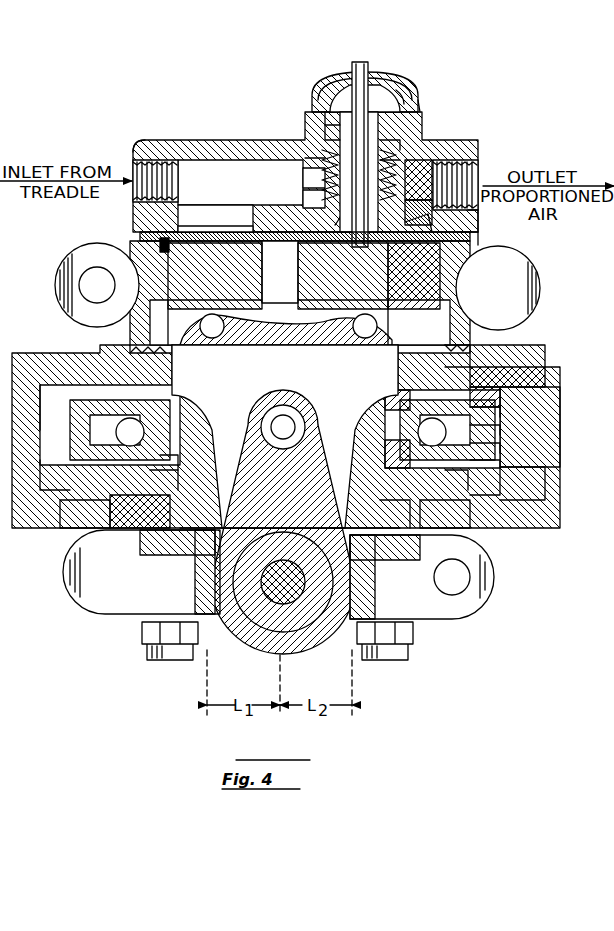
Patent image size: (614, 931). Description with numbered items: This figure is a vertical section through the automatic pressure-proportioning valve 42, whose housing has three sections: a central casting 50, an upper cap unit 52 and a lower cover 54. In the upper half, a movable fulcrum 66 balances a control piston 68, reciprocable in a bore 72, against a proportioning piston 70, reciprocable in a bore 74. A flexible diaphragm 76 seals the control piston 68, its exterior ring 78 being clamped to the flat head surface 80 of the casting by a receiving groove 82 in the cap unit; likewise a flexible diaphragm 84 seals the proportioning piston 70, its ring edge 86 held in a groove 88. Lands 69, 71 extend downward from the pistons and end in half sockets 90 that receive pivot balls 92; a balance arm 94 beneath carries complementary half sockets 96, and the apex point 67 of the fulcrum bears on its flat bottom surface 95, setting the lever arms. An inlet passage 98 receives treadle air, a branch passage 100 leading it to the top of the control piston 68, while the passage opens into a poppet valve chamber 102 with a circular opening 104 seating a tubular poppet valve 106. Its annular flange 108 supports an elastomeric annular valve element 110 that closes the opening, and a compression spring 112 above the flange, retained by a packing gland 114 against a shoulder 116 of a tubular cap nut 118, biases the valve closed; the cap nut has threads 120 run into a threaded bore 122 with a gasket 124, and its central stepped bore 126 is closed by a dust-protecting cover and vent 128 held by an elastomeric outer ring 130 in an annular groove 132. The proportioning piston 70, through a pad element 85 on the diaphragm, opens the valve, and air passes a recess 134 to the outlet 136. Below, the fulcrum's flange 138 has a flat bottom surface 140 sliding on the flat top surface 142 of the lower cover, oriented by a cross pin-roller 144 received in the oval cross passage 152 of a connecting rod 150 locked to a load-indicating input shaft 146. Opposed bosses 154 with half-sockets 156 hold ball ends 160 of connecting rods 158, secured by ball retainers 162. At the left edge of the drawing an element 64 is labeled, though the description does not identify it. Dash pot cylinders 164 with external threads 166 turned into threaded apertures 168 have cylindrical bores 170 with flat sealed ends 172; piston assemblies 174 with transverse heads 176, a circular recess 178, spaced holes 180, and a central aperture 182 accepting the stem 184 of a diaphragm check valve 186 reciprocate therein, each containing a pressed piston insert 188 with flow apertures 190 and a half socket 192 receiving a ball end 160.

The automatic pressure-proportioning valve 42 is at (105, 125).
The central casting 50 is at (462, 322).
The upper cap unit 52 is at (480, 146).
The lower cover 54 is at (232, 645).
The end cap 64 is at (40, 480).
The movable fulcrum 66 is at (238, 380).
The apex point 67 is at (282, 352).
The control piston 68 is at (215, 276).
The land 69 is at (182, 328).
The proportioning piston 70 is at (343, 276).
The land 71 is at (395, 335).
The bore 72 is at (150, 279).
The bore 74 is at (462, 268).
The flexible diaphragm 76 is at (226, 226).
The exterior ring 78 is at (158, 236).
The flat head surface 80 is at (136, 264).
The receiving groove 82 is at (162, 240).
The flexible diaphragm 84 is at (410, 226).
The pad element 85 is at (338, 226).
The ring edge 86 is at (470, 236).
The groove 88 is at (472, 224).
The half socket 90 is at (215, 316).
The pivot ball 92 is at (180, 343).
The balance arm 94 is at (218, 394).
The flat bottom surface 95 is at (306, 356).
The half socket 96 is at (285, 370).
The inlet passage 98 is at (232, 168).
The branch passage 100 is at (246, 210).
The poppet valve chamber 102 is at (328, 180).
The circular opening 104 is at (328, 196).
The poppet valve 106 is at (358, 80).
The annular flange 108 is at (432, 180).
The annular valve element 110 is at (414, 276).
The compression spring 112 is at (402, 160).
The packing gland 114 is at (386, 142).
The shoulder 116 is at (328, 112).
The tubular cap nut 118 is at (425, 126).
The threads 120 is at (330, 128).
The threaded bore 122 is at (320, 158).
The gasket 124 is at (410, 140).
The central stepped bore 126 is at (374, 86).
The dust-protecting cover and vent 128 is at (406, 80).
The elastomeric outer ring 130 is at (422, 100).
The annular groove 132 is at (400, 98).
The recess 134 is at (432, 207).
The outlet 136 is at (482, 172).
The flange 138 is at (170, 506).
The bottom surface 140 is at (186, 541).
The top surface 142 is at (214, 530).
The cross pin-roller 144 is at (283, 452).
The load-indicating input shaft 146 is at (306, 586).
The connecting rod 150 is at (342, 530).
The oval cross passage 152 is at (262, 420).
The boss 154 is at (385, 460).
The half-socket 156 is at (362, 433).
The connecting rod 158 is at (144, 432).
The ball end 160 is at (180, 412).
The ball retainer 162 is at (178, 466).
The dash pot cylinder 164 is at (556, 456).
The external threads 166 is at (178, 486).
The threaded aperture 168 is at (90, 520).
The cylindrical bore 170 is at (110, 480).
The flat sealed end 172 is at (512, 496).
The piston assembly 174 is at (486, 360).
The transverse head 176 is at (472, 394).
The circular recess 178 is at (492, 400).
The holes 180 is at (497, 415).
The aperture 182 is at (497, 432).
The stem 184 is at (497, 448).
The check valve 186 is at (497, 458).
The piston insert 188 is at (402, 505).
The flow apertures 190 is at (410, 400).
The half socket 192 is at (112, 366).